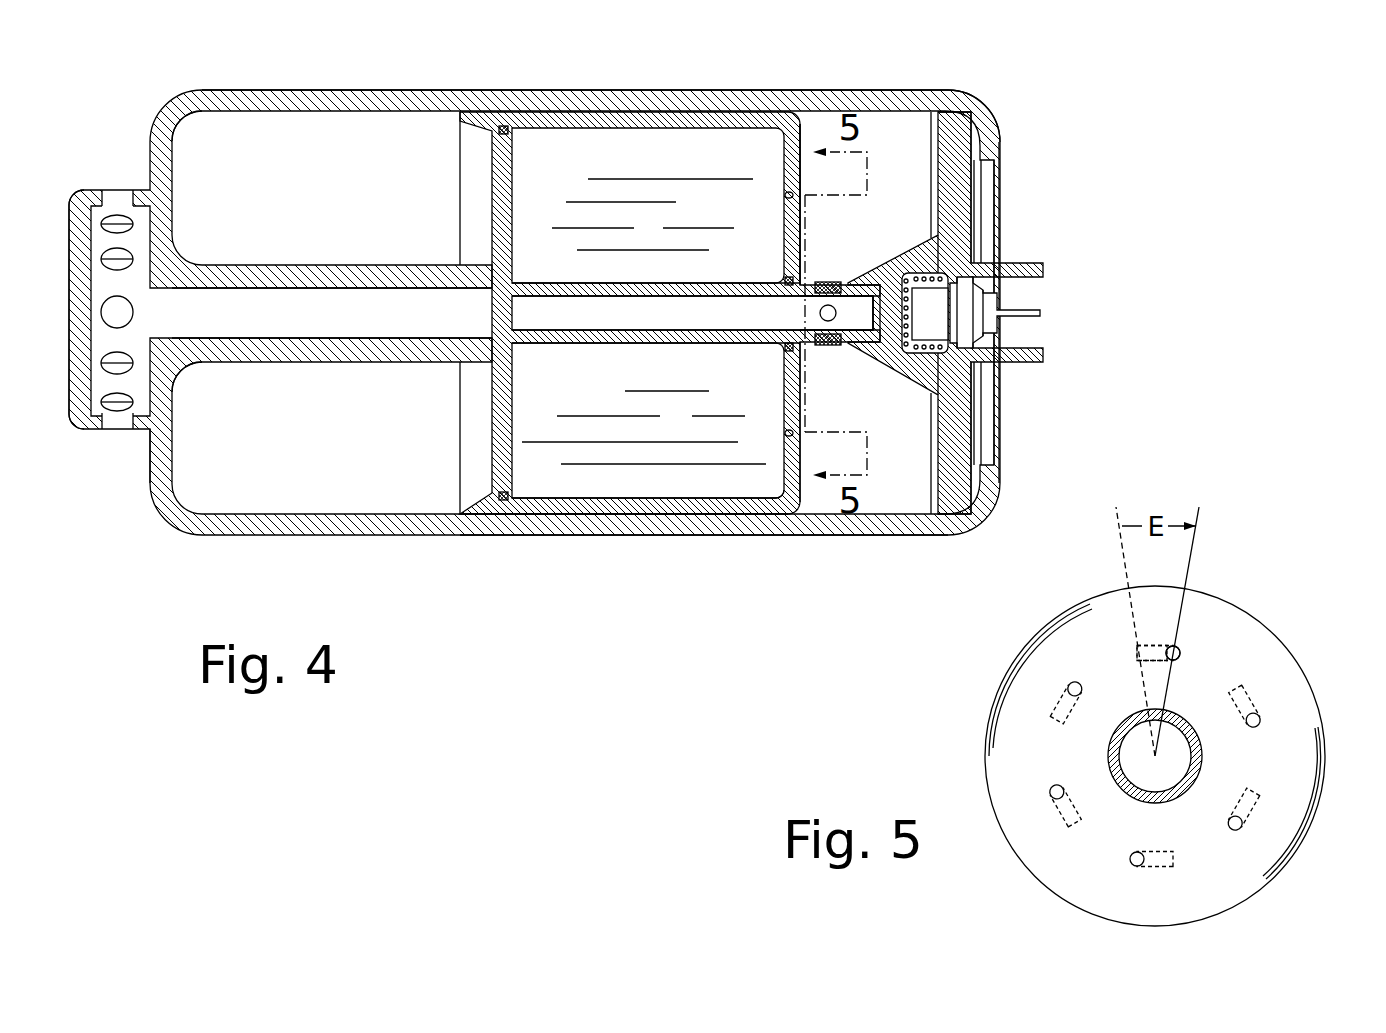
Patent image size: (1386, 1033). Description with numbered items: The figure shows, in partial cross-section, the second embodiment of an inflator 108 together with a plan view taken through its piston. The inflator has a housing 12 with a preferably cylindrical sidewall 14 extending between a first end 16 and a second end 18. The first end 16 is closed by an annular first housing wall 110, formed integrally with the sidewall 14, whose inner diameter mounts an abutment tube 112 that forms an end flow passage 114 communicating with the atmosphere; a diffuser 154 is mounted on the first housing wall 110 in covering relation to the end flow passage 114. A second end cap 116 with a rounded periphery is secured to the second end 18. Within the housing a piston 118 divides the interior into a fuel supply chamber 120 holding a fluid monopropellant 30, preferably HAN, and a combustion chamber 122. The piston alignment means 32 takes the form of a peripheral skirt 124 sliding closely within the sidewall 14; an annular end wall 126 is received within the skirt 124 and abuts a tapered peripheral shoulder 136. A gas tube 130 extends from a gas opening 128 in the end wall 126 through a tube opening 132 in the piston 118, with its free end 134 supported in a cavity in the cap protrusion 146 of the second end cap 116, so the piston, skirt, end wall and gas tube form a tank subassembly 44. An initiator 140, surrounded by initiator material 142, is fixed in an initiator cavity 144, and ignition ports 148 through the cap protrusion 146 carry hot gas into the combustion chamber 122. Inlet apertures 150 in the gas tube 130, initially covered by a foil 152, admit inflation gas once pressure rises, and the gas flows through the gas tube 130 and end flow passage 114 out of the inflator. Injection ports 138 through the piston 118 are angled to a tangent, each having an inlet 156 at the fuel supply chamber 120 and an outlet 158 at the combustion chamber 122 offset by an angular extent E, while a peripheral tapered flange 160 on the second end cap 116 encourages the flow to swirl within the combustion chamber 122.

In FIG. 4, the housing 12 is at (343, 90).
In FIG. 4, the sidewall 14 is at (530, 90).
In FIG. 4, the first end 16 is at (150, 148).
In FIG. 4, the second end 18 is at (1001, 150).
In FIG. 4, the fluid monopropellant 30 is at (690, 478).
In FIG. 4, the piston alignment means 32 is at (710, 518).
In FIG. 4, the tank subassembly 44 is at (548, 516).
In FIG. 4, the inflator 108 is at (988, 95).
In FIG. 4, the first housing wall 110 is at (172, 200).
In FIG. 4, the abutment tube 112 is at (268, 362).
In FIG. 4, the end flow passage 114 is at (292, 327).
In FIG. 4, the second end cap 116 is at (976, 223).
In FIG. 4, the piston 118 is at (784, 275).
In FIG. 5, the piston 118 is at (1275, 700).
In FIG. 4, the fuel supply chamber 120 is at (541, 171).
In FIG. 4, the combustion chamber 122 is at (861, 231).
In FIG. 4, the peripheral skirt 124 is at (546, 497).
In FIG. 4, the end wall 126 is at (511, 410).
In FIG. 4, the gas opening 128 is at (503, 298).
In FIG. 4, the gas tube 130 is at (588, 342).
In FIG. 5, the gas tube 130 is at (1136, 800).
In FIG. 4, the tube opening 132 is at (792, 323).
In FIG. 5, the tube opening 132 is at (1136, 758).
In FIG. 4, the free end 134 is at (852, 320).
In FIG. 4, the peripheral shoulder 136 is at (492, 495).
In FIG. 4, the injection ports 138 is at (789, 195).
In FIG. 5, the injection ports 138 is at (1140, 868).
In FIG. 4, the initiator 140 is at (991, 304).
In FIG. 4, the initiator material 142 is at (943, 347).
In FIG. 4, the initiator cavity 144 is at (903, 266).
In FIG. 4, the cap protrusion 146 is at (943, 393).
In FIG. 4, the ignition ports 148 is at (945, 235).
In FIG. 4, the inlet apertures 150 is at (833, 322).
In FIG. 4, the foil 152 is at (823, 346).
In FIG. 4, the diffuser 154 is at (118, 429).
In FIG. 5, the inlet 156 is at (1137, 652).
In FIG. 5, the outlet 158 is at (1180, 652).
In FIG. 4, the peripheral tapered flange 160 is at (940, 500).